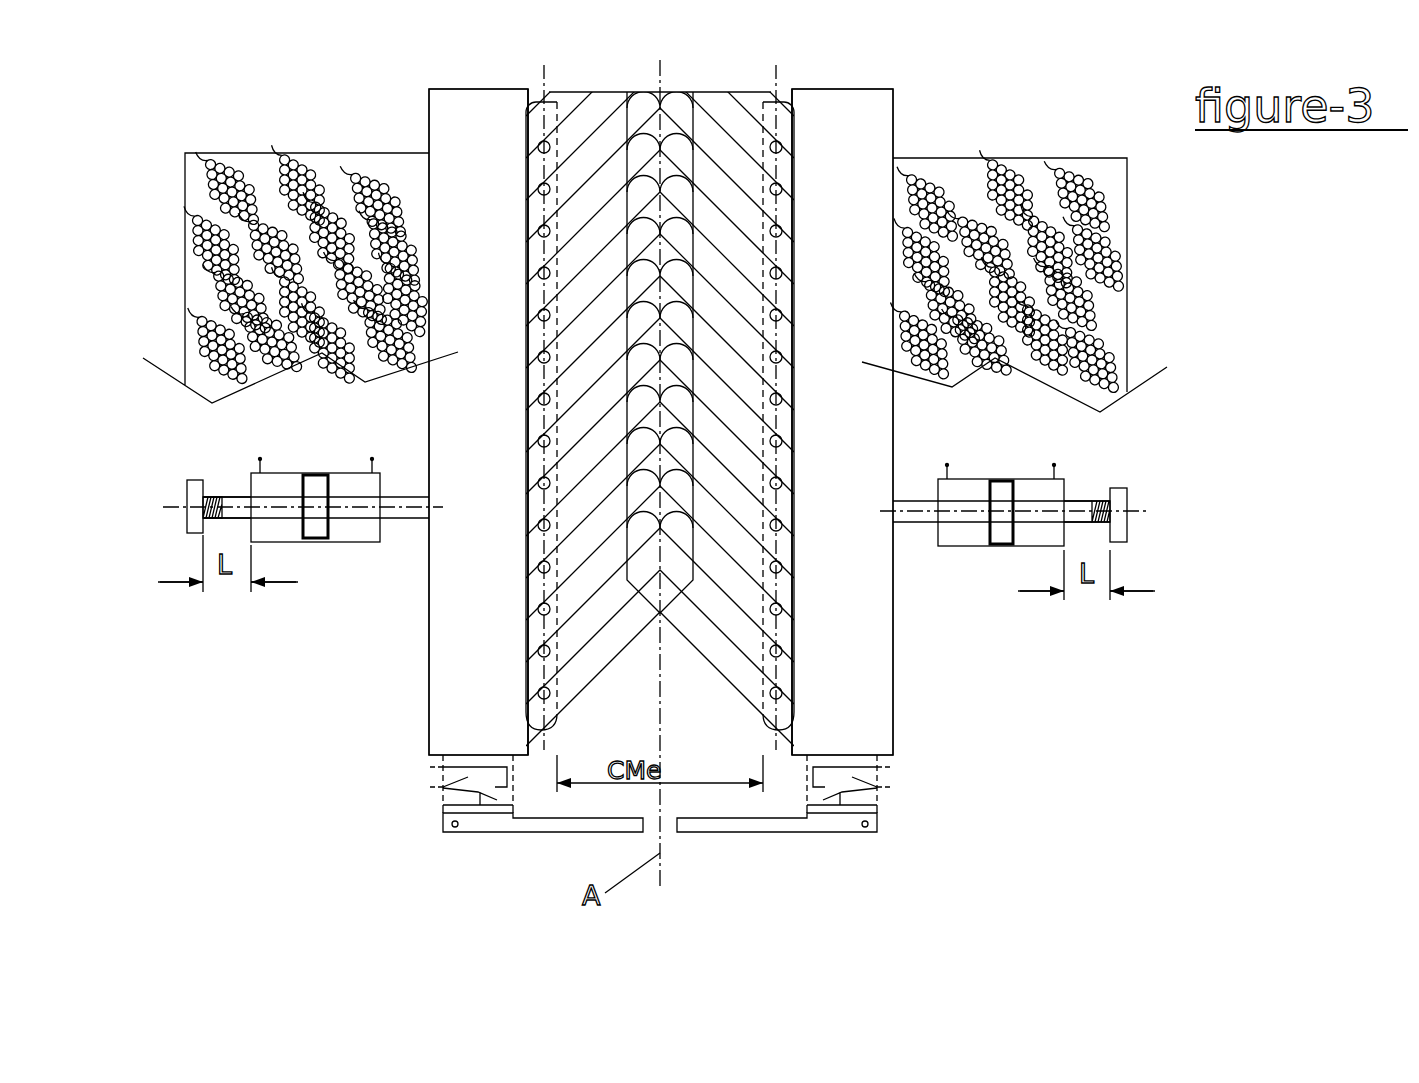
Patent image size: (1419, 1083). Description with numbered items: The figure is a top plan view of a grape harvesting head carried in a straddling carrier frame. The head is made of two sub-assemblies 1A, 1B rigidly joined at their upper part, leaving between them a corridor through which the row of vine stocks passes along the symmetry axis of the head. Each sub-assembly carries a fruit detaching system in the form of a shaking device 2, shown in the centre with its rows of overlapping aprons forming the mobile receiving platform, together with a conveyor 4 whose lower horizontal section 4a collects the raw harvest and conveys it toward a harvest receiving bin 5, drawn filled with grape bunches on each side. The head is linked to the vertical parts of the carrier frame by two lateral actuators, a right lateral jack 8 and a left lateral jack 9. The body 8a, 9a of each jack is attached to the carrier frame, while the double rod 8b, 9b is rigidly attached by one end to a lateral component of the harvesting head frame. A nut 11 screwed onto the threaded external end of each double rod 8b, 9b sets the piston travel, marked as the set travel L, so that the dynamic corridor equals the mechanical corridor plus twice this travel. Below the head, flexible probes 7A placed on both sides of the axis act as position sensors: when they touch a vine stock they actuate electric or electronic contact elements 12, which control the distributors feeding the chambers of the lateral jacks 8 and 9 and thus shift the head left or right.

The sub-assembly 1A is at (945, 133).
The sub-assembly 1B is at (410, 138).
The shaking device 2 is at (660, 445).
The conveyor 4 is at (415, 628).
The lower horizontal section 4a is at (465, 657).
The harvest receiving bin 5 is at (185, 183).
The flexible probe 7A is at (505, 822).
The right lateral jack 8 is at (963, 535).
The body of right jack 8a is at (963, 477).
The double rod of right jack 8b is at (1068, 508).
The left lateral jack 9 is at (355, 532).
The body of left jack 9a is at (347, 473).
The double rod of left jack 9b is at (243, 503).
The nut 11 is at (193, 489).
The contact element 12 is at (468, 777).